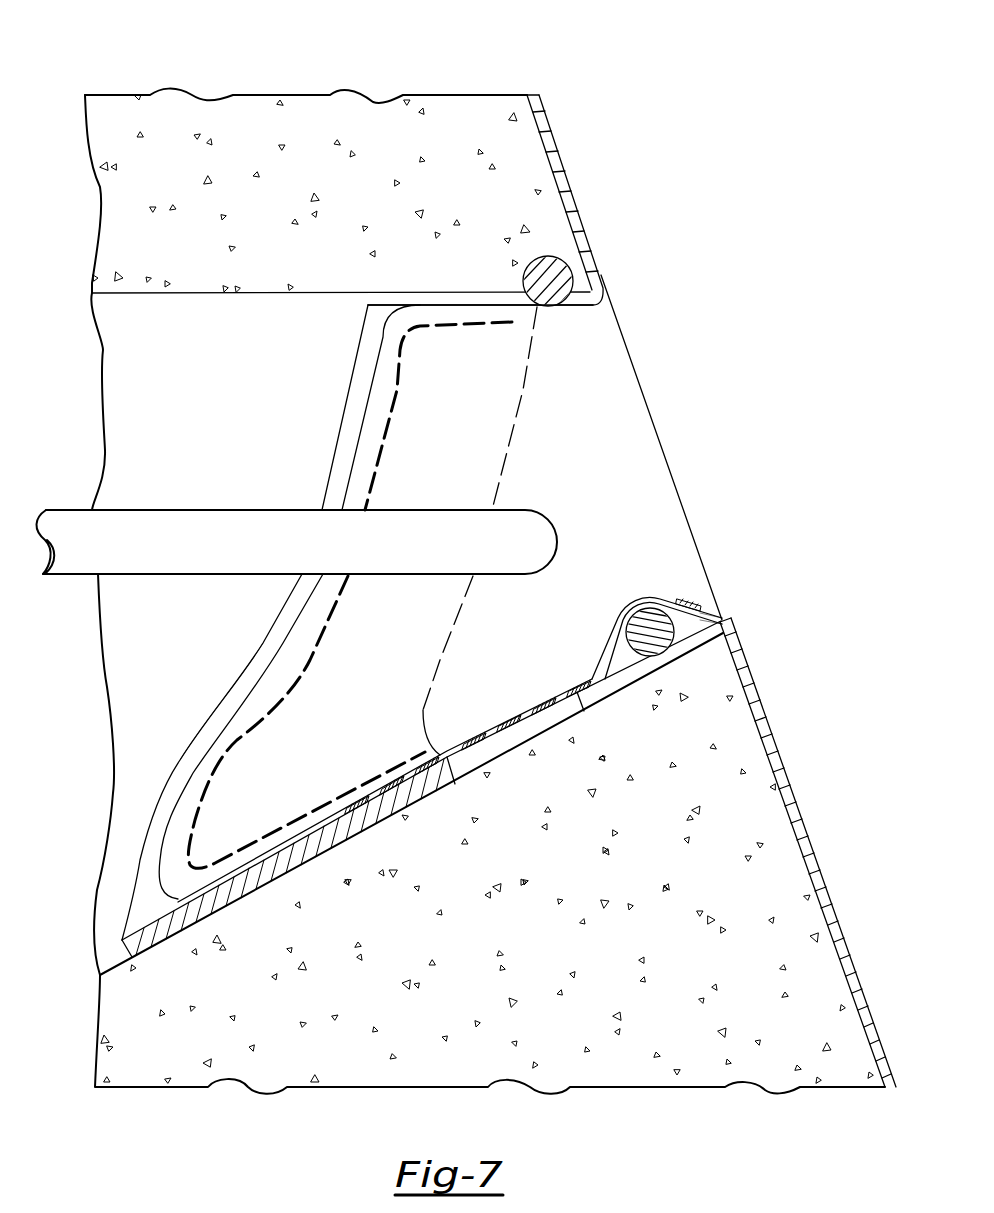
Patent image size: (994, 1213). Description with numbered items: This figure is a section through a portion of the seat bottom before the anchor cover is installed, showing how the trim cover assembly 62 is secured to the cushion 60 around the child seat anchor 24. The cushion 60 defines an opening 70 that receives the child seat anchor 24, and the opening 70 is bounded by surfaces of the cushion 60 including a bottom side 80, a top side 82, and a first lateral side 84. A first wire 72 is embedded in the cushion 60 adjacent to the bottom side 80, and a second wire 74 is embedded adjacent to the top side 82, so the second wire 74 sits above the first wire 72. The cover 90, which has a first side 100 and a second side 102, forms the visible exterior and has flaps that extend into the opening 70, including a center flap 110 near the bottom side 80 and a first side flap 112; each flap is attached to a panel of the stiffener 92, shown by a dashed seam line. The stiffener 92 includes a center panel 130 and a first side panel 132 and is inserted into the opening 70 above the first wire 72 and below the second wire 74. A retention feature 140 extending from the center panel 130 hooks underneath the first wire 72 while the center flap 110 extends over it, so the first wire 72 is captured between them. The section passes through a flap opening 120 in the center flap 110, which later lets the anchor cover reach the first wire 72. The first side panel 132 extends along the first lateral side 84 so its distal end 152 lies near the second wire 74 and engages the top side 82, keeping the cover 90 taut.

The child seat anchor 24 is at (442, 554).
The cushion 60 is at (103, 95).
The trim cover assembly 62 is at (524, 193).
The opening 70 is at (607, 362).
The first wire 72 is at (641, 645).
The second wire 74 is at (539, 294).
The bottom side 80 is at (115, 963).
The top side 82 is at (202, 297).
The first lateral side 84 is at (128, 388).
The cover 90 is at (550, 123).
The stiffener 92 is at (227, 693).
The first side 100 is at (815, 852).
The second side 102 is at (787, 820).
The center flap 110 is at (463, 743).
The first side flap 112 is at (435, 407).
The flap opening 120 is at (625, 608).
The center panel 130 is at (270, 885).
The first side panel 132 is at (333, 470).
The retention feature 140 is at (723, 620).
The distal end 152 is at (397, 304).